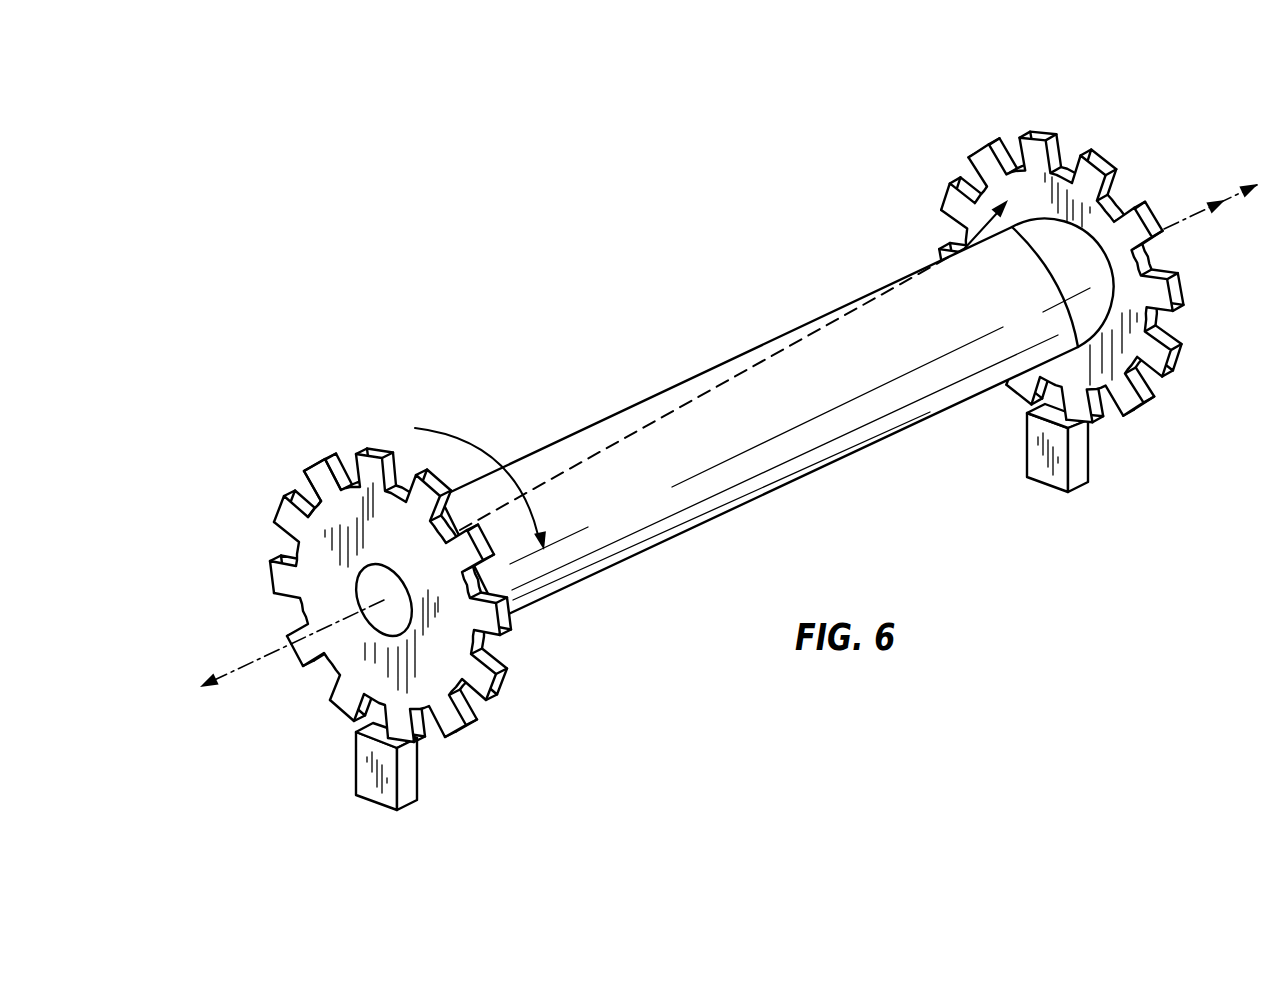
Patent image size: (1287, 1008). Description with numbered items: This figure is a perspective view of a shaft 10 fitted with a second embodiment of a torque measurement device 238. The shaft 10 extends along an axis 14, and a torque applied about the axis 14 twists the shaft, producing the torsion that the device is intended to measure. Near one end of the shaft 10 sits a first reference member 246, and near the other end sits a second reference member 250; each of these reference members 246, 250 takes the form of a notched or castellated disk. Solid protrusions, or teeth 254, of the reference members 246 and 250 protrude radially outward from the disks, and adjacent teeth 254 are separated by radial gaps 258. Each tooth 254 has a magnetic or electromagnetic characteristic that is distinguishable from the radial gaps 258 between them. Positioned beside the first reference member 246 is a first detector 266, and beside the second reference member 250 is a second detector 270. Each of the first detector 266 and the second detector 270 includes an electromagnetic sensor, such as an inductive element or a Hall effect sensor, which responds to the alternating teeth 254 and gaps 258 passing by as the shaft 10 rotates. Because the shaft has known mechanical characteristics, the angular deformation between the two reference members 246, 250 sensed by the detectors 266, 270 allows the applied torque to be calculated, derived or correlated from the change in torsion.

The torque measurement device 238 is at (511, 258).
The second reference member 250 is at (1038, 135).
The teeth 254 is at (313, 470).
The radial gaps 258 is at (307, 505).
The first reference member 246 is at (347, 568).
The axis 14 is at (186, 687).
The shaft 10 is at (813, 433).
The first detector 266 is at (407, 780).
The second detector 270 is at (1077, 468).